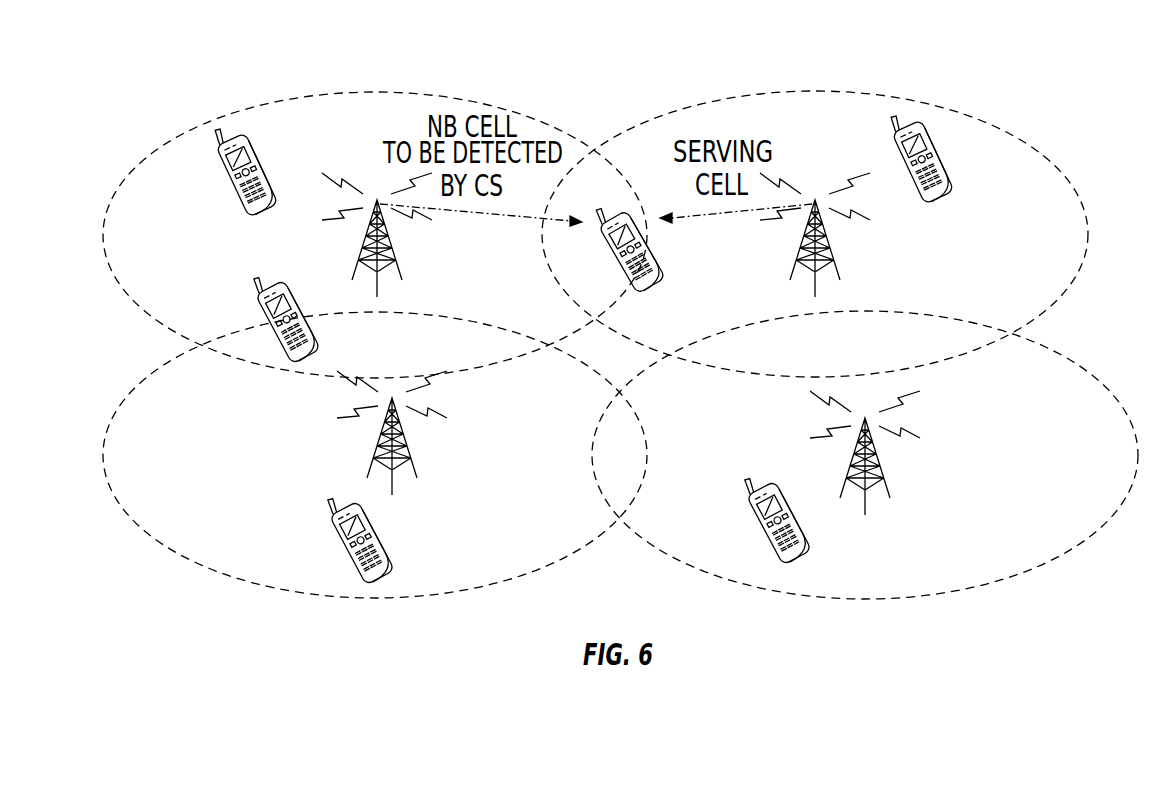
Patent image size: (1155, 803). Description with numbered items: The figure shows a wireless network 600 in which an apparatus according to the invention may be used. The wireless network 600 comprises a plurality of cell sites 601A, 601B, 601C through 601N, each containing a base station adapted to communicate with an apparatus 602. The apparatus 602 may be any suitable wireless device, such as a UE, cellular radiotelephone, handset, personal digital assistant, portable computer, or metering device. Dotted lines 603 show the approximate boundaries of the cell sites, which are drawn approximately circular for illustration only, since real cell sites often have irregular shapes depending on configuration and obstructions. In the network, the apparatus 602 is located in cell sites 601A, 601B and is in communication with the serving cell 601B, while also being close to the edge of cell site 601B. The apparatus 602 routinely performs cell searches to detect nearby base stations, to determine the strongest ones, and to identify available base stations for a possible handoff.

The wireless network 600 is at (1050, 93).
The cell site 601A is at (825, 235).
The cell site 601B is at (367, 228).
The cell site 601C is at (378, 442).
The cell site 601N is at (878, 455).
The apparatus 602 is at (652, 248).
The dotted lines 603 is at (613, 333).